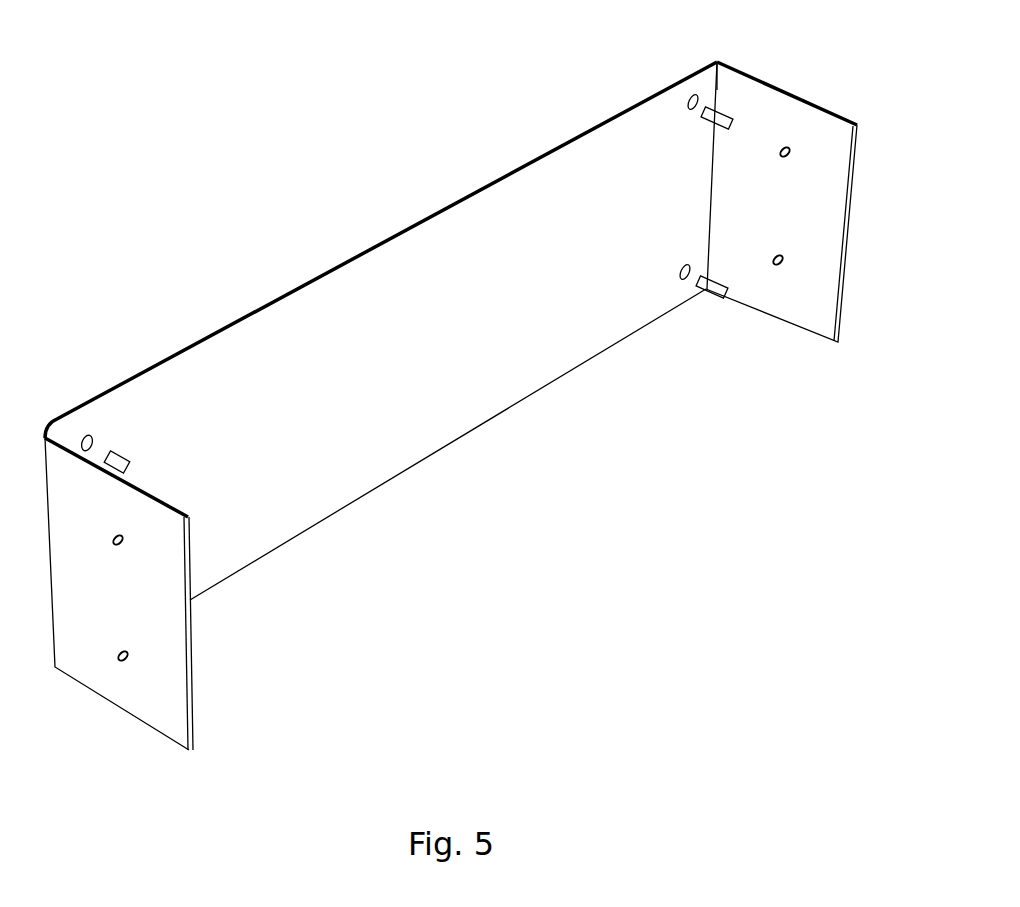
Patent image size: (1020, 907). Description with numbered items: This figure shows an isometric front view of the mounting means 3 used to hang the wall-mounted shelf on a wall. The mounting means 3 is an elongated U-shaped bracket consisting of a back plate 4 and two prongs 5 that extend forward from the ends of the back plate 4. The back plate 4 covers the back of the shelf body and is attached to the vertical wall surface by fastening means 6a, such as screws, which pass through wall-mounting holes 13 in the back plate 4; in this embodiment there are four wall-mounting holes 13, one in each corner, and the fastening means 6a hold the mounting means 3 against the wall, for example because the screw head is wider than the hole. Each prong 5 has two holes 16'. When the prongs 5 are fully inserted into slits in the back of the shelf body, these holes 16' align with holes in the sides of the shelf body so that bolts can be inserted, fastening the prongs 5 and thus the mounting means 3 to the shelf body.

The mounting means 3 is at (133, 198).
The back plate 4 is at (463, 215).
The prongs 5 is at (823, 283).
The wall-mounting holes 13 is at (692, 94).
The fastening means 6a is at (711, 122).
The prong holes 16' is at (444, 381).